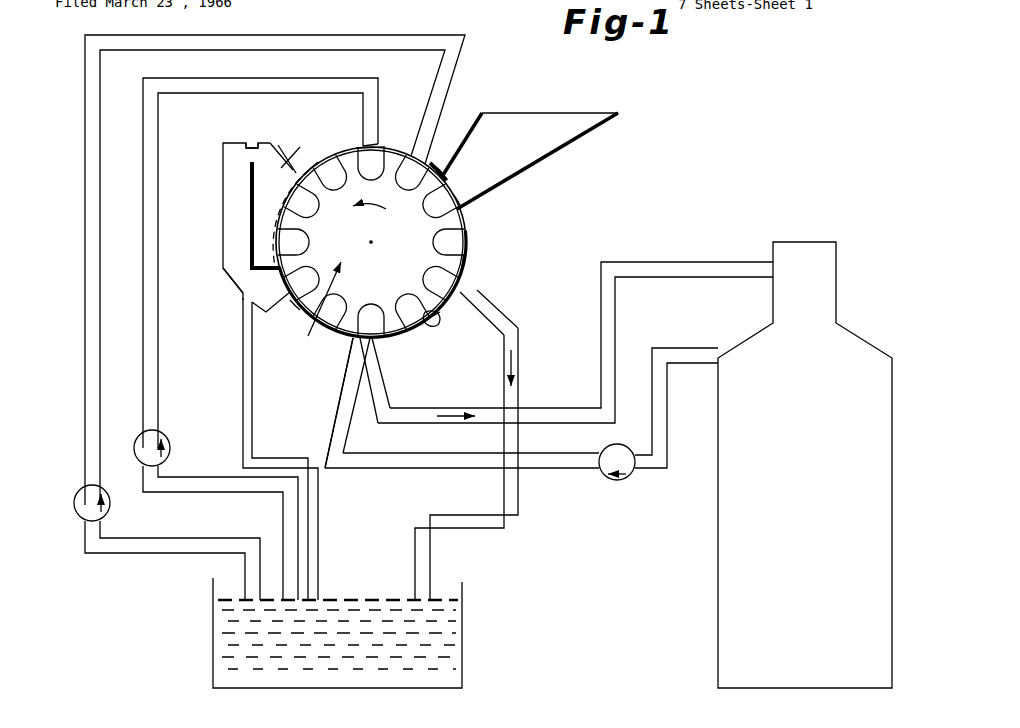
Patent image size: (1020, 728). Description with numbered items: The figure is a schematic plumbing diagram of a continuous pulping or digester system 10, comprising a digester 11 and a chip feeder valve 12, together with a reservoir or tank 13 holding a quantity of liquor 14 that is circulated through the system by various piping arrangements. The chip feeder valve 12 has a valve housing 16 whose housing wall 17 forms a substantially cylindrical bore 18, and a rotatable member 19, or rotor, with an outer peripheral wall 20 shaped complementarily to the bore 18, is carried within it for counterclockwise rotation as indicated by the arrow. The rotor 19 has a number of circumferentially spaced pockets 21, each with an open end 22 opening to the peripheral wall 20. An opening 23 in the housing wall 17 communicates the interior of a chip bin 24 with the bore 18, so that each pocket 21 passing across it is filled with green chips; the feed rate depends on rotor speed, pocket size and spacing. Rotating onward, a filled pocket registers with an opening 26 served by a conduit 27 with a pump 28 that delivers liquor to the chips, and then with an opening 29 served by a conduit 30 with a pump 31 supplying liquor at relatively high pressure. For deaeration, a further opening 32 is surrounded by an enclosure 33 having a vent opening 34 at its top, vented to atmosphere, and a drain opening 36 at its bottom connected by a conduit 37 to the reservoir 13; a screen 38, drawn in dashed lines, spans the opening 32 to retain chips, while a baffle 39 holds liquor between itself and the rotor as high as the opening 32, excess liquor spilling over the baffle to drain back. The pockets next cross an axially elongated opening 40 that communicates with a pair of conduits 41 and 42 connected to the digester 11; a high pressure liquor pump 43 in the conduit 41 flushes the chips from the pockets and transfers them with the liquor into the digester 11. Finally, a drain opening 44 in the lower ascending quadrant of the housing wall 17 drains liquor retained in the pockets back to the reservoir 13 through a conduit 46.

The continuous pulping or digester system 10 is at (633, 148).
The digester 11 is at (801, 436).
The chip feeder valve 12 is at (476, 242).
The reservoir or tank 13 is at (463, 620).
The liquor 14 is at (436, 606).
The valve housing 16 is at (428, 331).
The housing wall 17 is at (463, 268).
The cylindrical bore 18 is at (315, 312).
The rotatable member 19 is at (296, 300).
The outer peripheral wall 20 is at (275, 246).
The pockets 21 is at (311, 170).
The open end 22 is at (436, 314).
The opening 23 is at (452, 194).
The chip bin 24 is at (563, 142).
The opening 26 is at (432, 161).
The conduit 27 is at (416, 34).
The pump 28 is at (79, 516).
The opening 29 is at (368, 147).
The conduit 30 is at (314, 80).
The pump 31 is at (141, 463).
The opening 32 is at (288, 155).
The enclosure 33 is at (222, 163).
The vent opening 34 is at (250, 142).
The drain opening 36 is at (243, 293).
The conduit 37 is at (242, 387).
The screen 38 is at (276, 231).
The baffle 39 is at (250, 182).
The opening 40 is at (372, 340).
The conduit 41 is at (338, 409).
The conduit 42 is at (402, 378).
The high pressure liquor pump 43 is at (631, 477).
The drain opening 44 is at (465, 294).
The conduit 46 is at (521, 379).